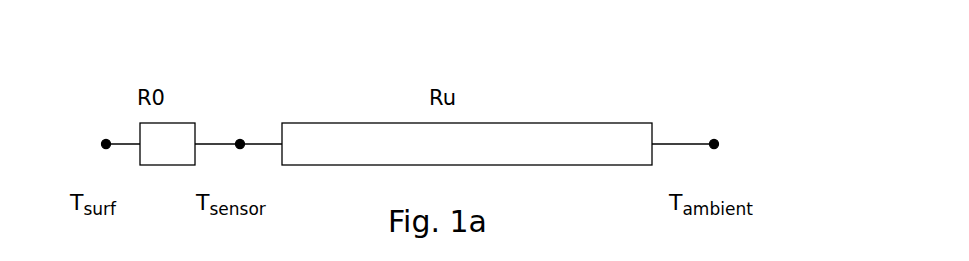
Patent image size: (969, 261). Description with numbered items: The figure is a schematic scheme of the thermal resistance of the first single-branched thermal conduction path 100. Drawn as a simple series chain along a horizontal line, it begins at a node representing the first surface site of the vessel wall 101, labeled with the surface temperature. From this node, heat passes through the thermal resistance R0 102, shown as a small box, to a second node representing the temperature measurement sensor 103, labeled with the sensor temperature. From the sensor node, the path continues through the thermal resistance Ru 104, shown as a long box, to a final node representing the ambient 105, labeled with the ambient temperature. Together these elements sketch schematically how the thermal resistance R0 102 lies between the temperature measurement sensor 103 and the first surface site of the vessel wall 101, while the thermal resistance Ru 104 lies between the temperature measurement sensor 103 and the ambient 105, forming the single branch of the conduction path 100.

The first single-branched thermal conduction path 100 is at (752, 78).
The first surface site of the vessel wall 101 is at (107, 132).
The thermal resistance R0 102 is at (183, 112).
The temperature measurement sensor 103 is at (248, 130).
The thermal resistance Ru 104 is at (385, 119).
The ambient 105 is at (712, 132).